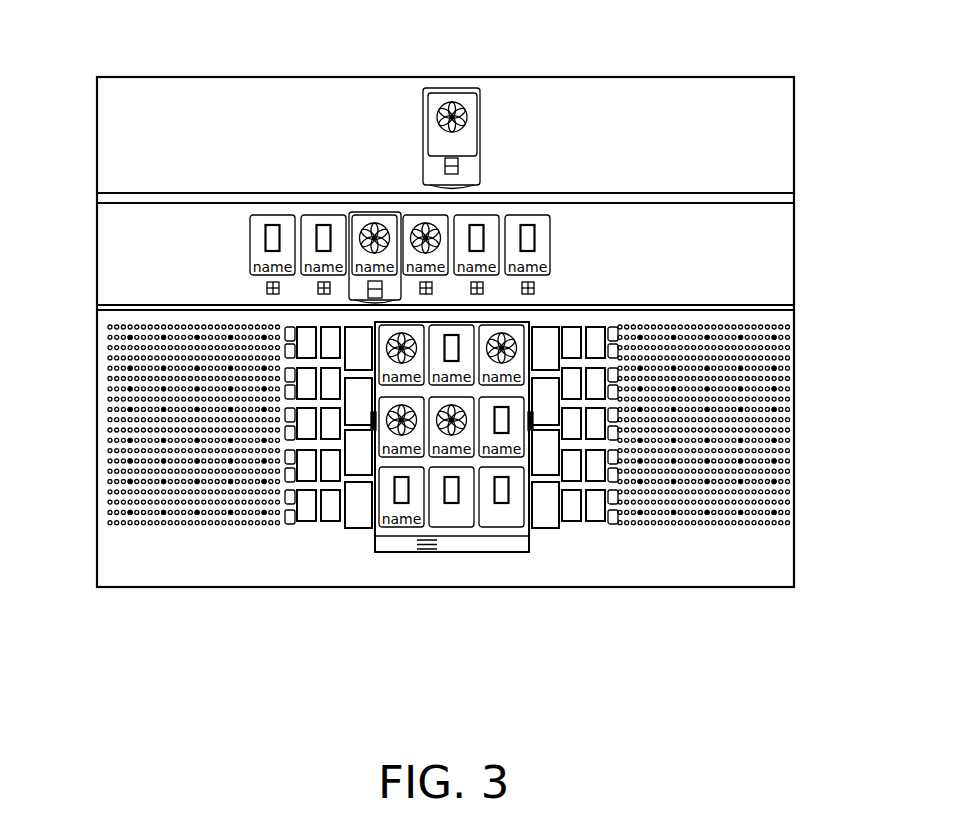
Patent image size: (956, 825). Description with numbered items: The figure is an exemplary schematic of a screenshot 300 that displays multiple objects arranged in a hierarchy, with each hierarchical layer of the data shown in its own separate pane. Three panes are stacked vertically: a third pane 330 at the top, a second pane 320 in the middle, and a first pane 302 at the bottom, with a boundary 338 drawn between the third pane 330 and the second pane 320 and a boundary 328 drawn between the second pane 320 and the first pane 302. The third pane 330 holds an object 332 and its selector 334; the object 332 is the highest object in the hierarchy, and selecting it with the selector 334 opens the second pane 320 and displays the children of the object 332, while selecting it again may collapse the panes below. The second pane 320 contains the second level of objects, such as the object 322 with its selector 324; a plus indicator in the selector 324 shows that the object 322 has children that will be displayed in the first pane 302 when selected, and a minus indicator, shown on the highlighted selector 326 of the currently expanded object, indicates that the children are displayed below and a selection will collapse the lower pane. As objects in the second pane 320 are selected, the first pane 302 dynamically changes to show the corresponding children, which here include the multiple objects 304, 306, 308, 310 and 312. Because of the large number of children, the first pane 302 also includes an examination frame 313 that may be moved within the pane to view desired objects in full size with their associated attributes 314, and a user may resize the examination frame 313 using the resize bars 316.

The screenshot 300 is at (456, 25).
The first pane 302 is at (100, 408).
The object 304 is at (243, 524).
The object 306 is at (287, 523).
The object 308 is at (330, 523).
The object 310 is at (355, 523).
The object 312 is at (388, 527).
The examination frame 313 is at (489, 560).
The attributes 314 is at (415, 527).
The resize bars 316 is at (531, 443).
The second pane 320 is at (97, 250).
The object 322 is at (250, 228).
The selector 324 is at (266, 288).
The selected card indicator 326 is at (370, 288).
The divider 328 is at (126, 303).
The third pane 330 is at (97, 107).
The object 332 is at (423, 128).
The selector 334 is at (444, 166).
The divider 338 is at (128, 192).